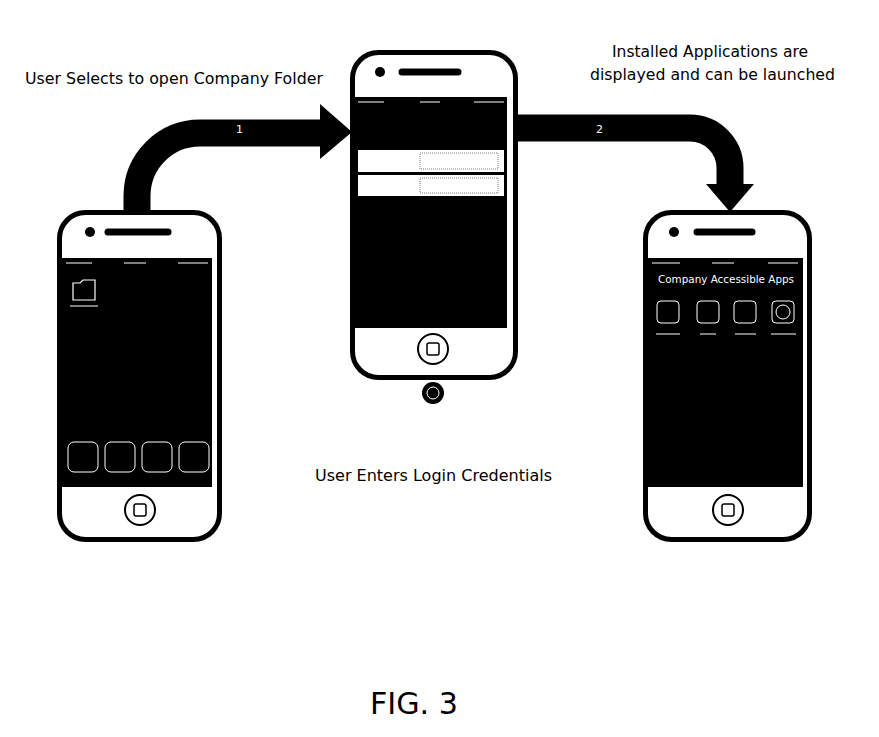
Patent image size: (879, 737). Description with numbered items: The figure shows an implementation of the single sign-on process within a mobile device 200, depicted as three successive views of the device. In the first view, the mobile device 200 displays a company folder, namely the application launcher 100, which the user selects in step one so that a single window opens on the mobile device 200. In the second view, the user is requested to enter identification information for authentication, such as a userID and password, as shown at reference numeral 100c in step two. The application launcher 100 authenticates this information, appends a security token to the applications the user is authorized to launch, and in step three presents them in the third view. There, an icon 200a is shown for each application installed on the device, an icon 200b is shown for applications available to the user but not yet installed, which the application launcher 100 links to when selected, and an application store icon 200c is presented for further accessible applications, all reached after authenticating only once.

The application launcher 100 is at (62, 300).
The authentication identification information entry 100c is at (452, 160).
The mobile device 200 is at (172, 556).
The icon for installed application 200a is at (745, 318).
The icon for available but not yet installed application 200b is at (775, 338).
The application store icon 200c is at (662, 318).